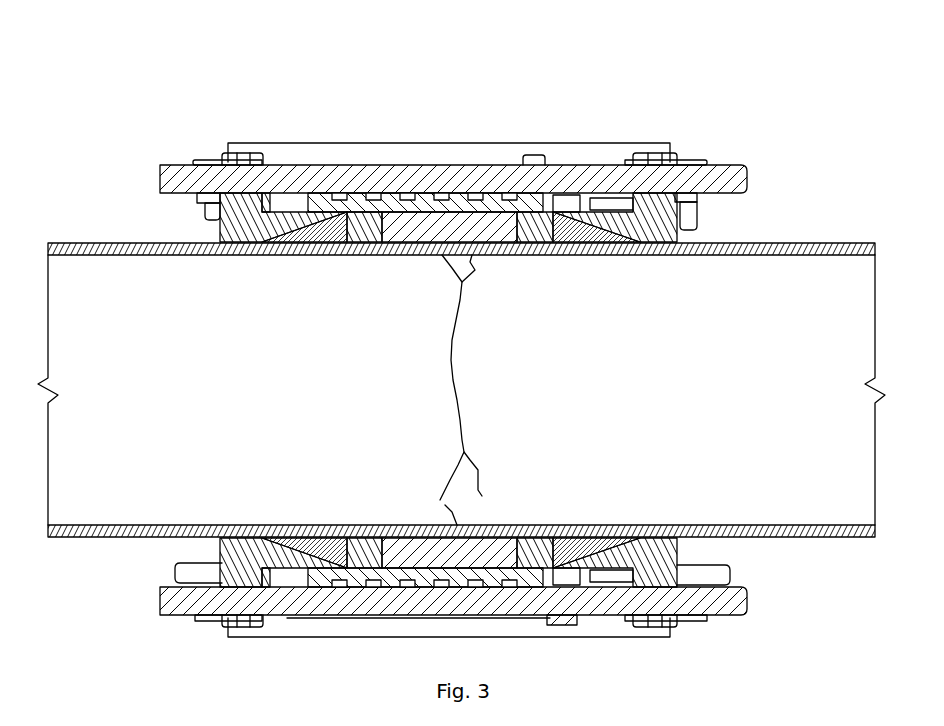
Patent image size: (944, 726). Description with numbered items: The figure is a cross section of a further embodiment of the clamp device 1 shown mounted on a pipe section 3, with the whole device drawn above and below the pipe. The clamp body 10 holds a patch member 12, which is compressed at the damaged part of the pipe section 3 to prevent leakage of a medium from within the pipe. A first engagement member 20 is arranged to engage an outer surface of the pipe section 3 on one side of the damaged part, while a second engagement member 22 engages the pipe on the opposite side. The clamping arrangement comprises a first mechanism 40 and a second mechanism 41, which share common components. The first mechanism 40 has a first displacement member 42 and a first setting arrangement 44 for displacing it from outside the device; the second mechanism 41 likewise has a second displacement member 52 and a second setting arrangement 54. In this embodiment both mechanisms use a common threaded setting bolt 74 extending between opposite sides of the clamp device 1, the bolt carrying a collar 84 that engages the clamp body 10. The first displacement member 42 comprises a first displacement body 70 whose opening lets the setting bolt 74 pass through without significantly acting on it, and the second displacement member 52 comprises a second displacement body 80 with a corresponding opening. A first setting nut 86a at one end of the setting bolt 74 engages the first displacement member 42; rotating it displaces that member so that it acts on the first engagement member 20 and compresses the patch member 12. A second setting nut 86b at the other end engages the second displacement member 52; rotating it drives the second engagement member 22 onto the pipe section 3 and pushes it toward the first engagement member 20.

The clamp device 1 is at (175, 65).
The pipe section 3 is at (95, 298).
The clamp body 10 is at (532, 155).
The patch member 12 is at (462, 228).
The first engagement member 20 is at (316, 238).
The second engagement member 22 is at (598, 212).
The first mechanism 40 is at (168, 112).
The second mechanism 41 is at (713, 80).
The first displacement member 42 is at (259, 156).
The first setting arrangement 44 is at (449, 337).
The second setting arrangement 54 is at (449, 627).
The second displacement member 52 is at (630, 210).
The first displacement body 70 is at (220, 212).
The threaded setting bolt 74 is at (740, 163).
The second displacement body 80 is at (683, 230).
The collar 84 is at (558, 200).
The first setting nut 86a is at (203, 152).
The second setting nut 86b is at (692, 155).